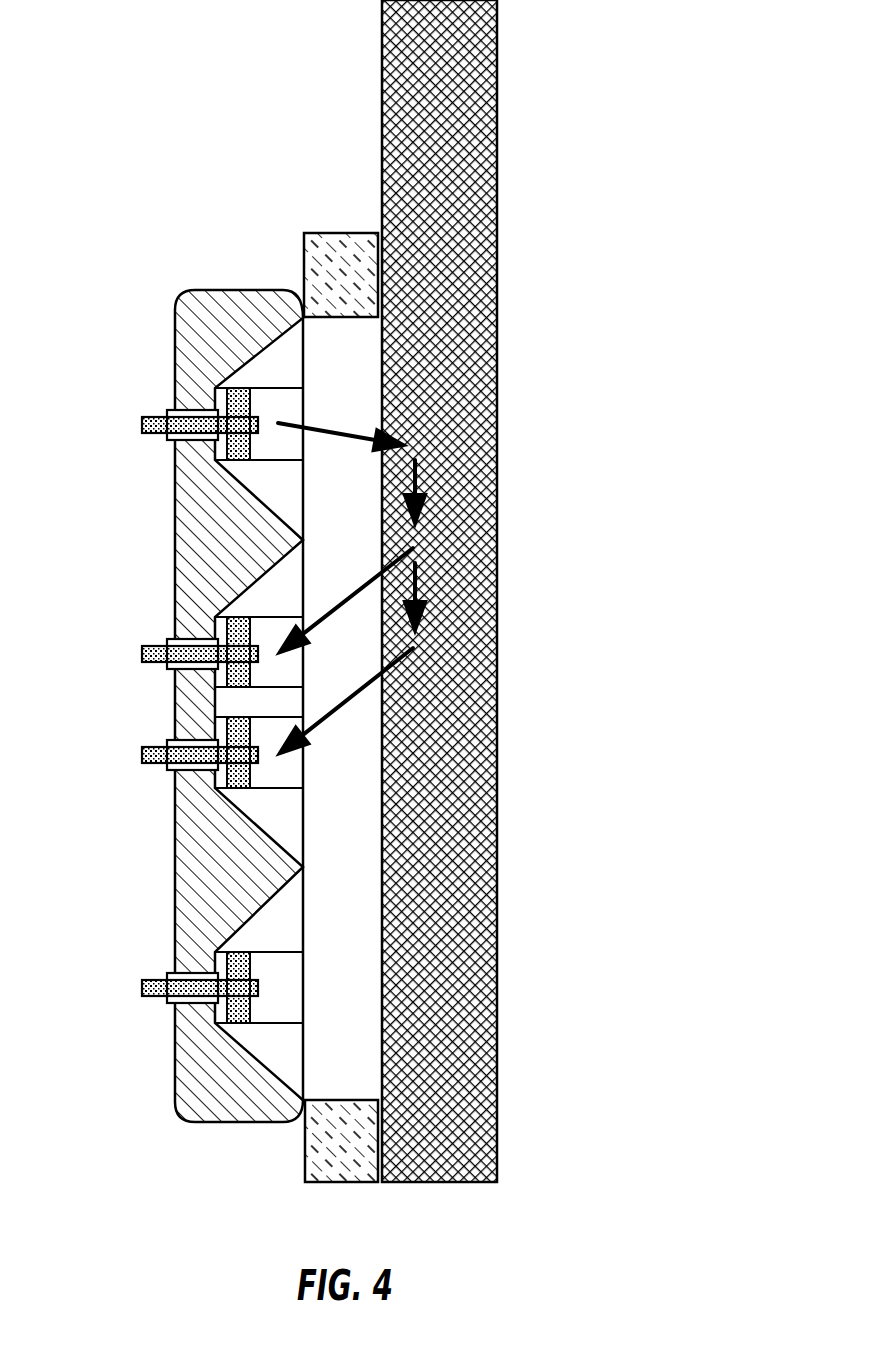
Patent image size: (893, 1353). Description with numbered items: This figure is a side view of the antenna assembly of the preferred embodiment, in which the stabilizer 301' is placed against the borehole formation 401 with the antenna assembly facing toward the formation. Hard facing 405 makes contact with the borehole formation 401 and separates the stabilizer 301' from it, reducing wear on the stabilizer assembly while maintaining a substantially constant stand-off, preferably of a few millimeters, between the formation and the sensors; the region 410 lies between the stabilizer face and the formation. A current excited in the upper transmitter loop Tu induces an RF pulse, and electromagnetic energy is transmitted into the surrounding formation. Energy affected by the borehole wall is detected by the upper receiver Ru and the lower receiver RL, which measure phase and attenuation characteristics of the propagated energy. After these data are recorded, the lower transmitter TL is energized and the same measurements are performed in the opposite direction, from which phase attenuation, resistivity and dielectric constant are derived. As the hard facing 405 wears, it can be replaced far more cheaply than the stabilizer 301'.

The borehole formation 401 is at (477, 273).
The hard facing 405 is at (342, 233).
The stabilizer 301' is at (216, 686).
The fluid gap / acoustic path 410 is at (360, 878).
The upper transmitter loop Tu is at (169, 424).
The upper receiver Ru is at (168, 652).
The lower receiver RL is at (168, 752).
The lower transmitter TL is at (169, 987).